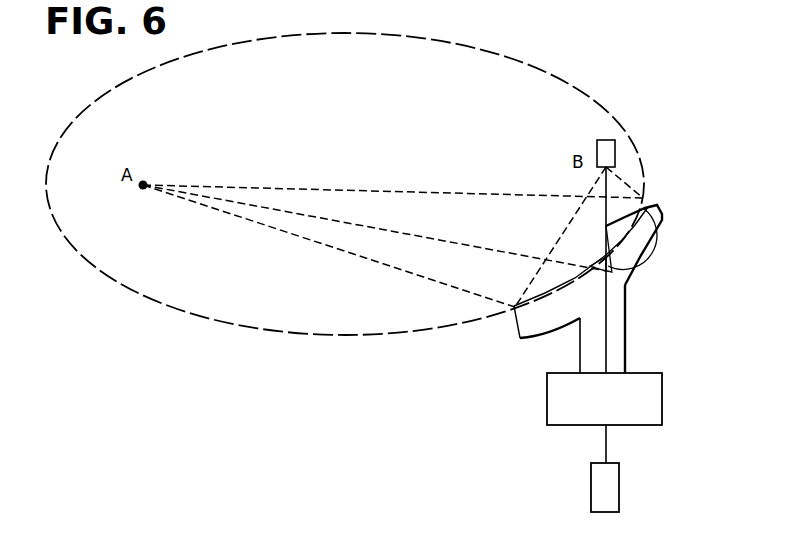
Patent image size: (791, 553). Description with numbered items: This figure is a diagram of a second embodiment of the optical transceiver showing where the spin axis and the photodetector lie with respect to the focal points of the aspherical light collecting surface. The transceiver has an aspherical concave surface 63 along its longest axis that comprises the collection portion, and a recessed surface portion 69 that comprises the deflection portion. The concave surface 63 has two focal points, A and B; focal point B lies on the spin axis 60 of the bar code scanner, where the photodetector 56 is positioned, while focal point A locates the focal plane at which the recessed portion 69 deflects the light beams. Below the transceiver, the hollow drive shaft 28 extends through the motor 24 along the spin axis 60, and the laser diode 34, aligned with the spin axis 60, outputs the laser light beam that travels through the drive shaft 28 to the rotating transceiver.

The photodetector 56 is at (597, 143).
The spin axis 60 is at (662, 209).
The recessed surface portion 69 is at (649, 256).
The aspherical concave surface 63 is at (550, 293).
The drive shaft 28 is at (625, 355).
The motor 24 is at (662, 400).
The laser diode 34 is at (619, 483).